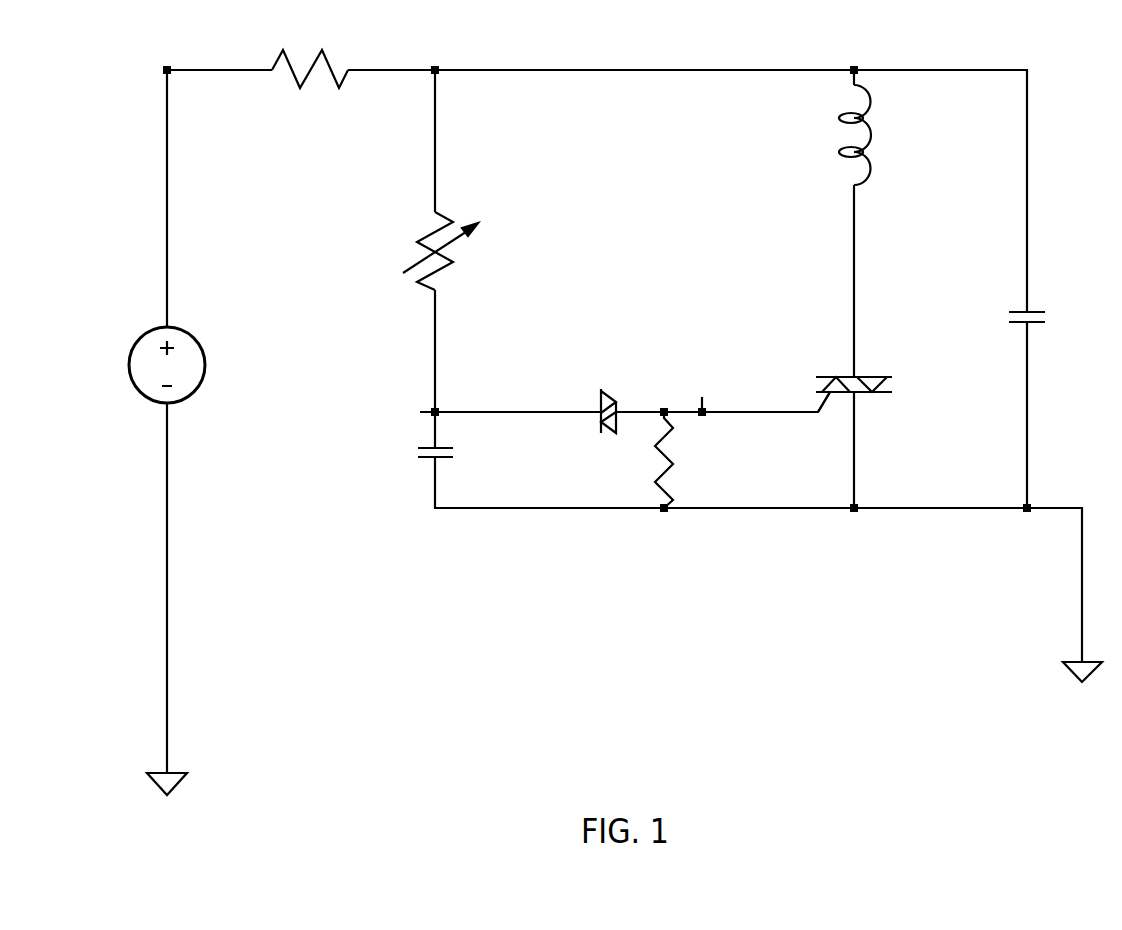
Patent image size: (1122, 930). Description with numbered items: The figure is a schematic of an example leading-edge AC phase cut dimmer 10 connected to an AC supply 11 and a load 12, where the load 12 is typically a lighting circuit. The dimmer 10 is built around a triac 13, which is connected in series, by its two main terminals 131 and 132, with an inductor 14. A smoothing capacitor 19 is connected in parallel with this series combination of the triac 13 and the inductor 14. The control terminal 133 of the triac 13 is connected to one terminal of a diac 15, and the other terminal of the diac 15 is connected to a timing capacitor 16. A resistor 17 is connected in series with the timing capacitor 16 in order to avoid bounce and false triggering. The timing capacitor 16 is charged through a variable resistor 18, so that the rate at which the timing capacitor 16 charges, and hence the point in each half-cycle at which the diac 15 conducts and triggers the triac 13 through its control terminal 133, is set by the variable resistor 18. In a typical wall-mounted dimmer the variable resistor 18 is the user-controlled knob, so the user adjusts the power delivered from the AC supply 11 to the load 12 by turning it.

The leading-edge AC phase cut dimmer 10 is at (660, 258).
The AC supply 11 is at (131, 367).
The load 12 is at (322, 50).
The triac 13 is at (835, 387).
The main terminal of triac 131 is at (870, 393).
The main terminal of triac 132 is at (863, 373).
The control terminal of triac 133 is at (833, 393).
The inductor 14 is at (873, 137).
The diac 15 is at (601, 392).
The timing capacitor 16 is at (418, 457).
The resistor 17 is at (673, 472).
The variable resistor 18 is at (418, 242).
The smoothing capacitor 19 is at (1046, 322).